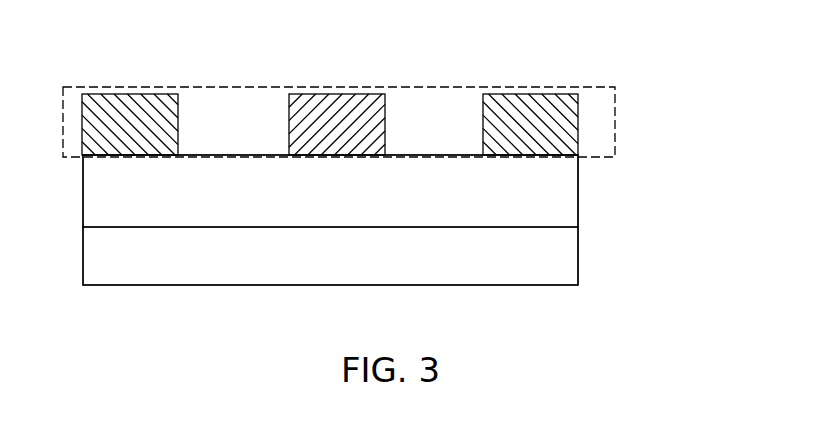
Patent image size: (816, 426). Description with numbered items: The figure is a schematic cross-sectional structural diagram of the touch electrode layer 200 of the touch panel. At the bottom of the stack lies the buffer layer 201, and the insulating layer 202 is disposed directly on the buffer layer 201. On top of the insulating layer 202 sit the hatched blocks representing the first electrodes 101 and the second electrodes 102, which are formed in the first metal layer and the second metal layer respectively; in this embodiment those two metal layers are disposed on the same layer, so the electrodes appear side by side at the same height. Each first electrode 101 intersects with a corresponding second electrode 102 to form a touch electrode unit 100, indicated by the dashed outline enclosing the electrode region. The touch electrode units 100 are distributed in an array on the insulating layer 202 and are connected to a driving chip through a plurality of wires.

The touch electrode layer 200 is at (237, 60).
The touch electrode unit 100 is at (257, 97).
The second electrode 102 is at (358, 100).
The first electrode 101 is at (560, 120).
The insulating layer 202 is at (562, 197).
The buffer layer 201 is at (560, 265).